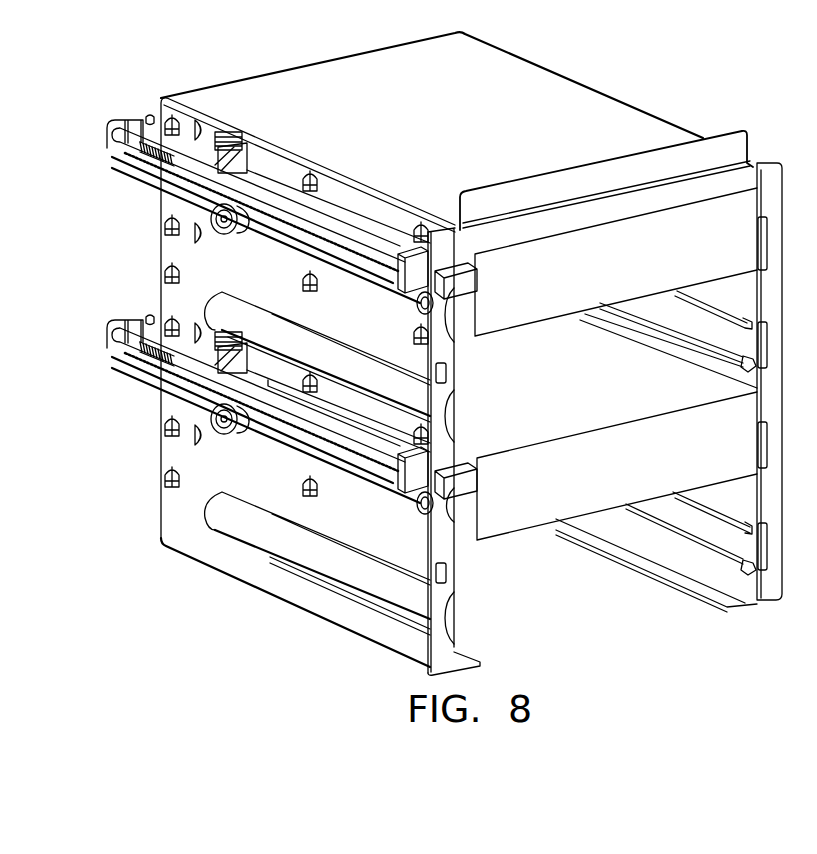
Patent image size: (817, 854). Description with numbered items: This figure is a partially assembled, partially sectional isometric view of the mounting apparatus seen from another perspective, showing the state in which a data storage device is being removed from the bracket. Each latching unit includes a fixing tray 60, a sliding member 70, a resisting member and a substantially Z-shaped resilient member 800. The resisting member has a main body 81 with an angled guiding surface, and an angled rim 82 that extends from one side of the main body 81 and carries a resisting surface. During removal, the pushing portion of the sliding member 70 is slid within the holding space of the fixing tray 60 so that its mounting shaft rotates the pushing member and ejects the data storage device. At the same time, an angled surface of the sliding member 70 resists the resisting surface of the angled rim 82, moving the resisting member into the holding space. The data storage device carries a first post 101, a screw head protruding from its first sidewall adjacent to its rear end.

The fixing tray 60 is at (118, 157).
The sliding member 70 is at (195, 167).
The main body 81 is at (245, 163).
The angled rim 82 is at (195, 119).
The resilient member 800 is at (220, 146).
The first post 101 is at (232, 225).